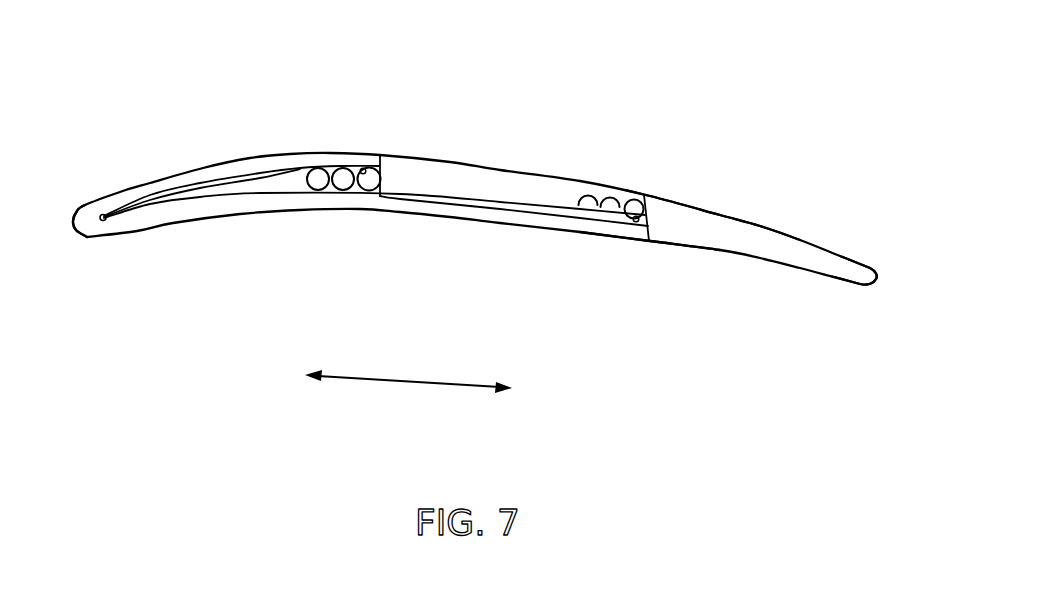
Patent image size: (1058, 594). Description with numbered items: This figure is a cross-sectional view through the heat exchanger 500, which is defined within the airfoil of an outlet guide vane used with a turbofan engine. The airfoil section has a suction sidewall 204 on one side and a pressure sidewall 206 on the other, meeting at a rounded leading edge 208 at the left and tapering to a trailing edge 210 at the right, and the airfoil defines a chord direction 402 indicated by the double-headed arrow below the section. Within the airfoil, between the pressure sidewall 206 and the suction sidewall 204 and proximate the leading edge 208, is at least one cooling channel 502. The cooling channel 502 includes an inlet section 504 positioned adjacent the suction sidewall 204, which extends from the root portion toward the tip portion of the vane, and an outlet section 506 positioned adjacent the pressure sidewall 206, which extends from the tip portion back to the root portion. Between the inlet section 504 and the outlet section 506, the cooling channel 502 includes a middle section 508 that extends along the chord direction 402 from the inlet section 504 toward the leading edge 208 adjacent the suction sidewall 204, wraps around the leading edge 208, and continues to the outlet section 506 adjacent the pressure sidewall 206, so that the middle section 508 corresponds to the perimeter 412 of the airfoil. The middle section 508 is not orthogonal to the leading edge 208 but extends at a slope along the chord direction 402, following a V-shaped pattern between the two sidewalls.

The heat exchanger 500 is at (499, 184).
The leading edge 208 is at (77, 238).
The trailing edge 210 is at (877, 286).
The suction sidewall 204 is at (666, 196).
The pressure sidewall 206 is at (663, 243).
The perimeter 412 is at (745, 218).
The cooling channel 502 is at (440, 194).
The inlet section 504 is at (376, 156).
The outlet section 506 is at (596, 195).
The middle section 508 is at (256, 203).
The chord direction 402 is at (417, 384).